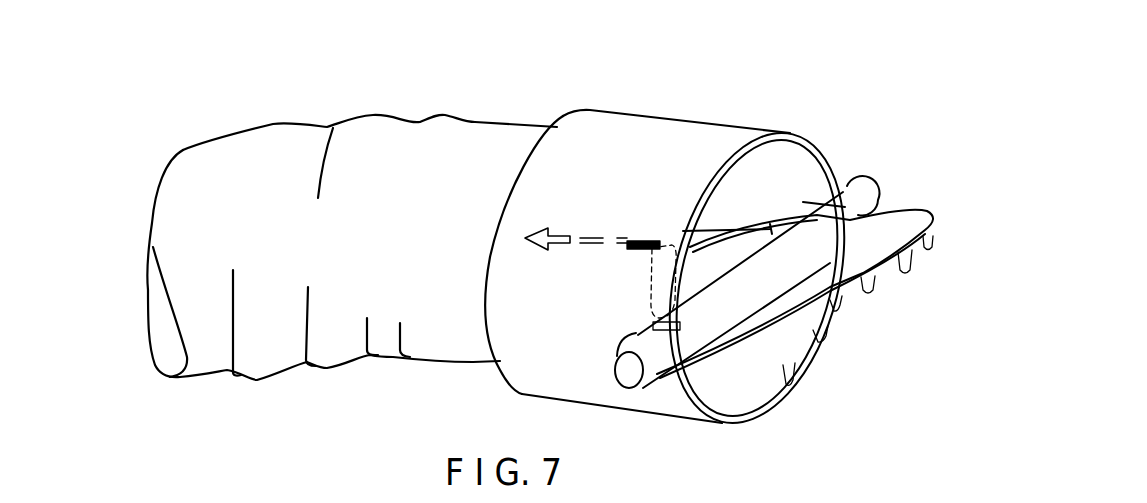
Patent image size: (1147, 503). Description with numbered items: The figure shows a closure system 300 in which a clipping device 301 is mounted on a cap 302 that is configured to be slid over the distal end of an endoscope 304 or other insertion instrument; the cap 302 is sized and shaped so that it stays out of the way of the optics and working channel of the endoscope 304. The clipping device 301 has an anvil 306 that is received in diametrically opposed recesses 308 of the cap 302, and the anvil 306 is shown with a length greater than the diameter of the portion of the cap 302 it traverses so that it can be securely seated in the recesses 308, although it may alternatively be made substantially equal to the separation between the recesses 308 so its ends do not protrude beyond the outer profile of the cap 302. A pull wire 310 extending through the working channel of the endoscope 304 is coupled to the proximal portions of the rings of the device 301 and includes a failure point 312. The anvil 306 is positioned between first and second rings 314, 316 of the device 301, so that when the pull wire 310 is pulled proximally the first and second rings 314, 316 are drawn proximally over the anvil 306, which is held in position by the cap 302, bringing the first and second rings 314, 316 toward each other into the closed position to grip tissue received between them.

The closure system 300 is at (682, 260).
The clipping device 301 is at (900, 186).
The cap 302 is at (730, 96).
The endoscope 304 is at (345, 93).
The anvil 306 is at (648, 380).
The recesses 308 is at (807, 202).
The pull wire 310 is at (548, 228).
The failure point 312 is at (647, 241).
The first ring 314 is at (925, 208).
The second ring 316 is at (768, 413).